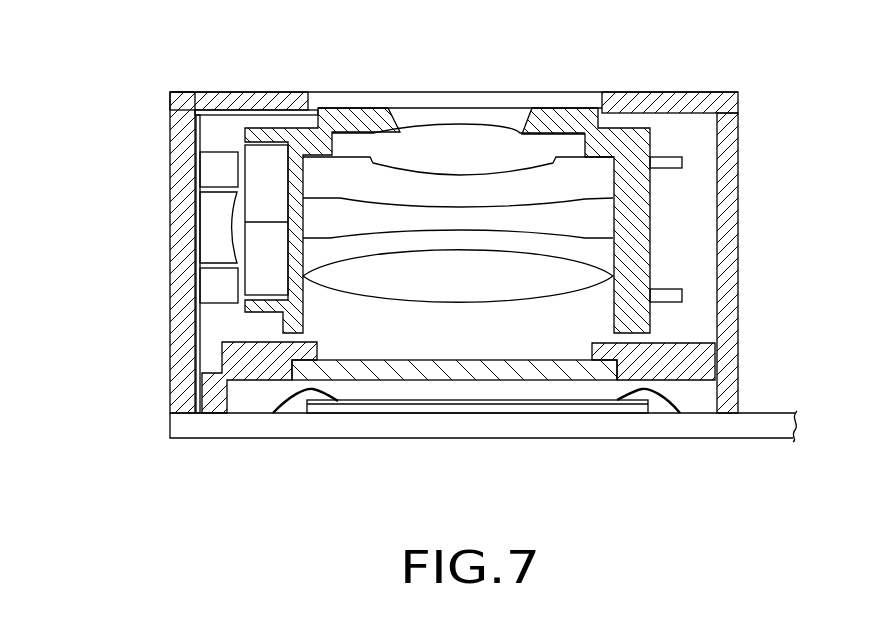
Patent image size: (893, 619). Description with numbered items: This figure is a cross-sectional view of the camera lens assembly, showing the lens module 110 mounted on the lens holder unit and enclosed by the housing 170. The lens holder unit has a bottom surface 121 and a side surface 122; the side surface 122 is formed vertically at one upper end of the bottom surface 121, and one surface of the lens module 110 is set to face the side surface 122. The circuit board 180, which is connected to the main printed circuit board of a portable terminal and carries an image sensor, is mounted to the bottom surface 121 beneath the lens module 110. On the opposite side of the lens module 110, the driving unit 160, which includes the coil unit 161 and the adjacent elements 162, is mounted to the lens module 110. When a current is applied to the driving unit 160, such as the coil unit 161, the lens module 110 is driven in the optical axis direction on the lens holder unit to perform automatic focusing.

The lens module 110 is at (637, 243).
The bottom surface 121 is at (253, 372).
The side surface 122 is at (731, 166).
The driving unit 160 is at (160, 224).
The coil unit 161 is at (258, 195).
The magnet 162 is at (208, 167).
The housing 170 is at (243, 102).
The circuit board 180 is at (478, 428).